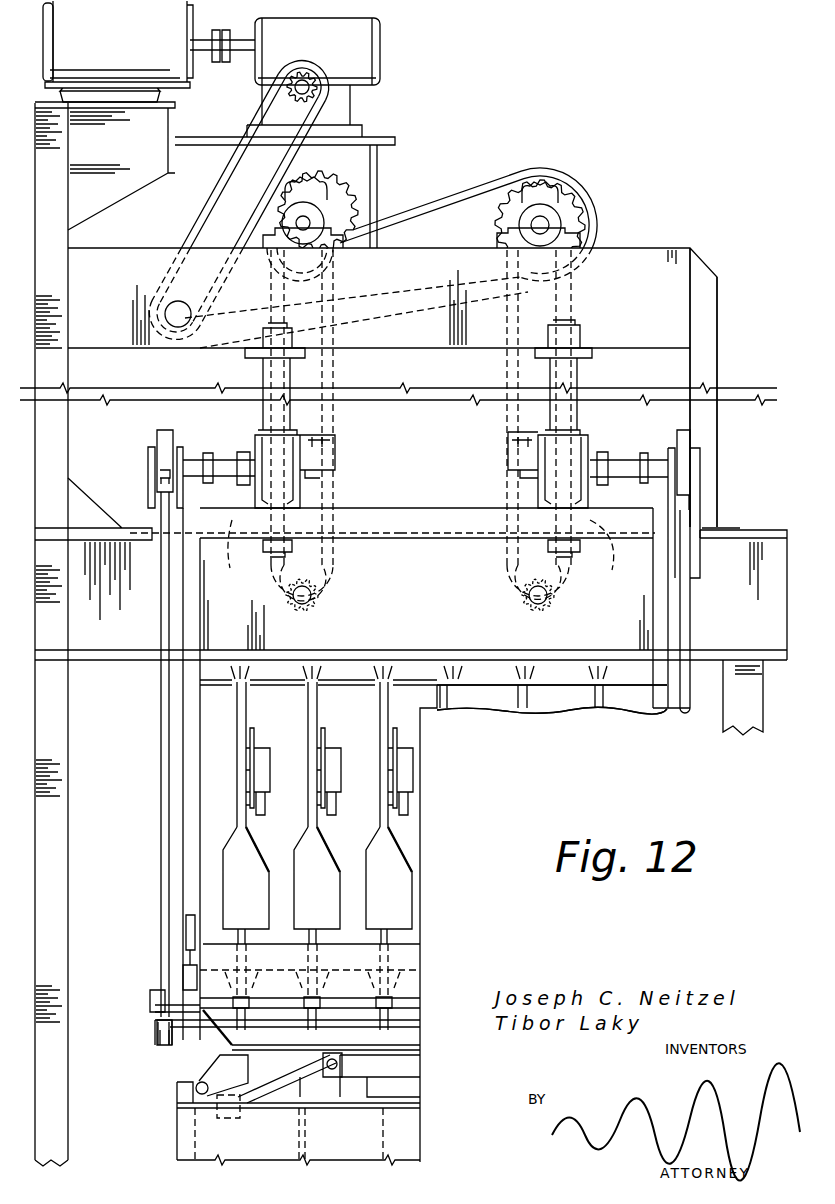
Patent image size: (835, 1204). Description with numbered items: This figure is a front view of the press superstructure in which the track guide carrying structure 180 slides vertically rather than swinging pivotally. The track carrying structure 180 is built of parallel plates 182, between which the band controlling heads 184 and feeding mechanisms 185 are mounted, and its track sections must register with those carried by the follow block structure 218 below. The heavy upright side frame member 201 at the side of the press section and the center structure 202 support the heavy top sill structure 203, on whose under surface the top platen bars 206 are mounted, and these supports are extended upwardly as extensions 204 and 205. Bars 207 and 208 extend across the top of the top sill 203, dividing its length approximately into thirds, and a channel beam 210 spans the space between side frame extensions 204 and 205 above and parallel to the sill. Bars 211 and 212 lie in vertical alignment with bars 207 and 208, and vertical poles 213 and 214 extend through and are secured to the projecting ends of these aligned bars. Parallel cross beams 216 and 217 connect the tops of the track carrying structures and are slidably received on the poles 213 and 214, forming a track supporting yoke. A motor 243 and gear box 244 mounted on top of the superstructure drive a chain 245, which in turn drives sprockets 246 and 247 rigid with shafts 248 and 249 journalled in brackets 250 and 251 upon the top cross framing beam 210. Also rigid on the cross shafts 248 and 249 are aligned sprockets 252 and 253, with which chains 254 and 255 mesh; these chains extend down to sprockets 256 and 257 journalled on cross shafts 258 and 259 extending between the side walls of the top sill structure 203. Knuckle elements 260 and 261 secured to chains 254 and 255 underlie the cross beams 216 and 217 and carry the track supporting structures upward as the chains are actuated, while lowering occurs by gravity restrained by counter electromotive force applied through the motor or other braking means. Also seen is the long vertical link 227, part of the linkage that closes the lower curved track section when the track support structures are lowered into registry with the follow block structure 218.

The motor 243 is at (124, 45).
The gear box 244 is at (362, 39).
The chain 245 is at (475, 187).
The sprocket 246 is at (335, 197).
The sprocket 247 is at (567, 200).
The shaft 248 is at (308, 224).
The shaft 249 is at (546, 226).
The bracket 250 is at (277, 205).
The bracket 251 is at (558, 215).
The sprocket 252 is at (313, 180).
The sprocket 253 is at (548, 183).
The chain 254 is at (340, 338).
The chain 255 is at (570, 313).
The channel beam 210 is at (645, 262).
The side frame extension 204 is at (57, 314).
The bar 211 is at (247, 360).
The bar 212 is at (591, 344).
The vertical pole 213 is at (264, 413).
The vertical pole 214 is at (578, 381).
The center structure extension 205 is at (713, 422).
The cross beam 216 is at (303, 496).
The cross beam 217 is at (538, 488).
The knuckle element 260 is at (340, 520).
The knuckle element 261 is at (535, 519).
The top sill structure 203 is at (755, 535).
The bar 207 is at (269, 425).
The sprocket 256 is at (328, 569).
The sprocket 257 is at (512, 565).
The cross shaft 258 is at (308, 596).
The cross shaft 259 is at (530, 596).
The bar 208 is at (573, 559).
The long vertical link 227 is at (160, 740).
The track carrying structure 180 is at (188, 804).
The parallel plate 182 is at (310, 702).
The band controlling head 184 is at (343, 760).
The feeding mechanism 185 is at (300, 875).
The top platen bar 206 is at (438, 688).
The center structure 202 is at (742, 718).
The upright side frame member 201 is at (57, 962).
The follow block structure 218 is at (203, 1052).